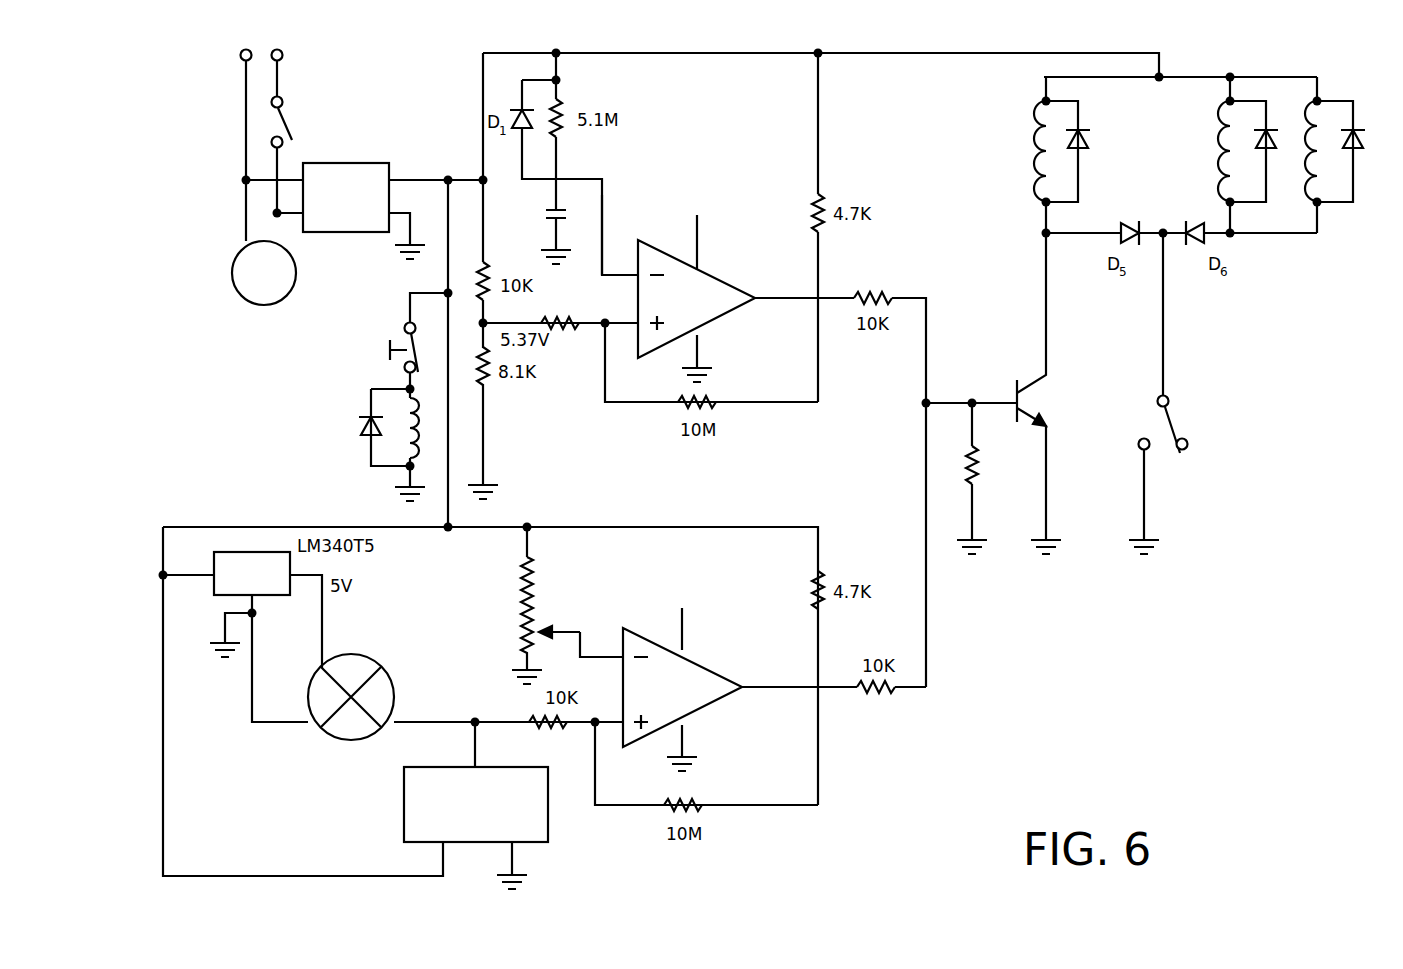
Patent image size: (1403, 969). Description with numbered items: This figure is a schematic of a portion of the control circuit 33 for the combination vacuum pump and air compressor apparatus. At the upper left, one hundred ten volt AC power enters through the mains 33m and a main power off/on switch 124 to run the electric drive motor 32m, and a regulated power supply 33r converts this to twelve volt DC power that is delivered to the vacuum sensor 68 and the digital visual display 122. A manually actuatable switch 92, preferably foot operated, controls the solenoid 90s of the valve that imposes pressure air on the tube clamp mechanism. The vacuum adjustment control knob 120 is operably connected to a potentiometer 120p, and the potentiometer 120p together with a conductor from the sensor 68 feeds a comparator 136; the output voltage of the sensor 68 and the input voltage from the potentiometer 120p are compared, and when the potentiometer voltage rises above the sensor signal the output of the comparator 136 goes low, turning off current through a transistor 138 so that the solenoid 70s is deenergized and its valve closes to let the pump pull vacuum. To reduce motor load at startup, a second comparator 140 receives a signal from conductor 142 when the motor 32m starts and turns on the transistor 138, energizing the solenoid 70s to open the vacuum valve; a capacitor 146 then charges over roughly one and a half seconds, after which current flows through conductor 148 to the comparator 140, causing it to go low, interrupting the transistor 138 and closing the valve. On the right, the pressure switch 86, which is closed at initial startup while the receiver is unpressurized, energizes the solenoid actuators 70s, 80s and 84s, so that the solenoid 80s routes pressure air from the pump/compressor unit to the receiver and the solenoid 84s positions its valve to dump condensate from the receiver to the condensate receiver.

The control circuit 33 is at (446, 84).
The mains 33m is at (296, 66).
The main power off/on switch 124 is at (290, 120).
The regulated power supply 33r is at (350, 232).
The electric drive motor 32m is at (274, 305).
The manually actuatable switch 92 is at (400, 322).
The solenoid 90s is at (360, 428).
The conductor 142 is at (548, 323).
The capacitor 146 is at (548, 207).
The conductor 148 is at (624, 196).
The comparator 140 is at (740, 313).
The transistor 138 is at (1022, 378).
The solenoid 70s is at (1032, 200).
The solenoid 80s is at (1222, 197).
The solenoid 84s is at (1322, 206).
The pressure switch 86 is at (1172, 425).
The vacuum sensor 68 is at (356, 656).
The digital visual display 122 is at (404, 806).
The potentiometer 120p is at (505, 630).
The rotary control knob 120 is at (580, 628).
The comparator 136 is at (720, 705).